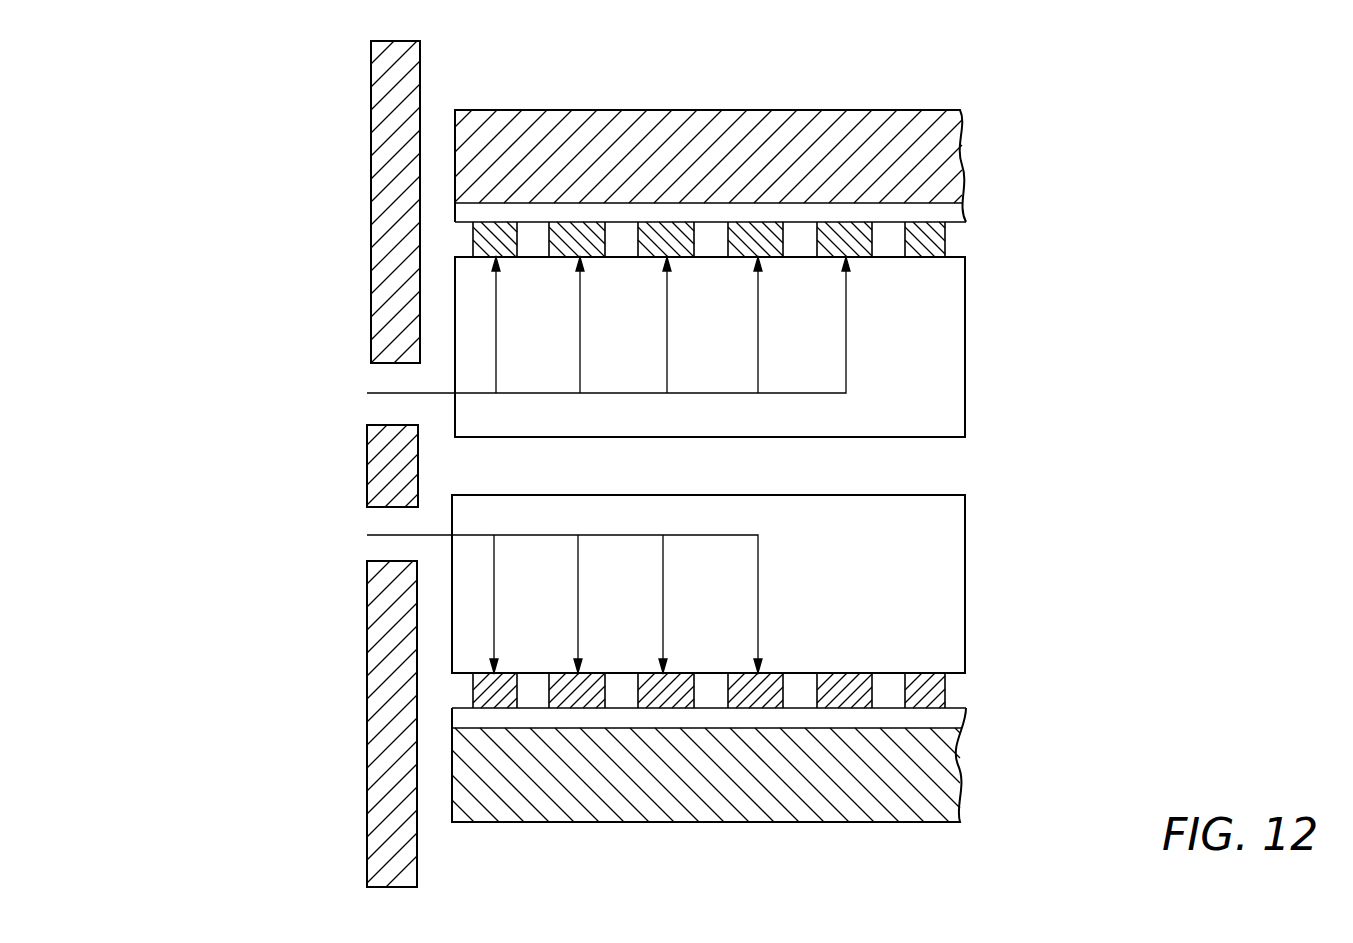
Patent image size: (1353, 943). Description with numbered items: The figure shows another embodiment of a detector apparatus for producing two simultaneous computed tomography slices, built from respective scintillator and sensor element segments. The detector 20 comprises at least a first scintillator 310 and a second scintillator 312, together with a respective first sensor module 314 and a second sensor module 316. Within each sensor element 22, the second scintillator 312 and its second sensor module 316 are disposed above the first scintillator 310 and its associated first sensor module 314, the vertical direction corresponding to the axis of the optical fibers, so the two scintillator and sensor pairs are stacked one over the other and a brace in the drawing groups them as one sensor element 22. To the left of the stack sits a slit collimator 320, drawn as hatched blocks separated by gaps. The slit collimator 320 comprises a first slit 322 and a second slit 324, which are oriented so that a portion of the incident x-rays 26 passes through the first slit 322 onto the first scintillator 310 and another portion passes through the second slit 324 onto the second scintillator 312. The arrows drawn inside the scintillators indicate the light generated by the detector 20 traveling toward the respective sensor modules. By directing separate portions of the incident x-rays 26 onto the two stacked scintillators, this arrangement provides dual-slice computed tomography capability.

The detector 20 is at (233, 266).
The sensor element 22 is at (1018, 105).
The incident x-rays 26 is at (352, 393).
The first scintillator 310 is at (942, 620).
The second scintillator 312 is at (940, 400).
The first sensor module 314 is at (972, 669).
The second sensor module 316 is at (980, 198).
The slit collimator 320 is at (378, 147).
The first slit 322 is at (372, 548).
The second slit 324 is at (385, 378).